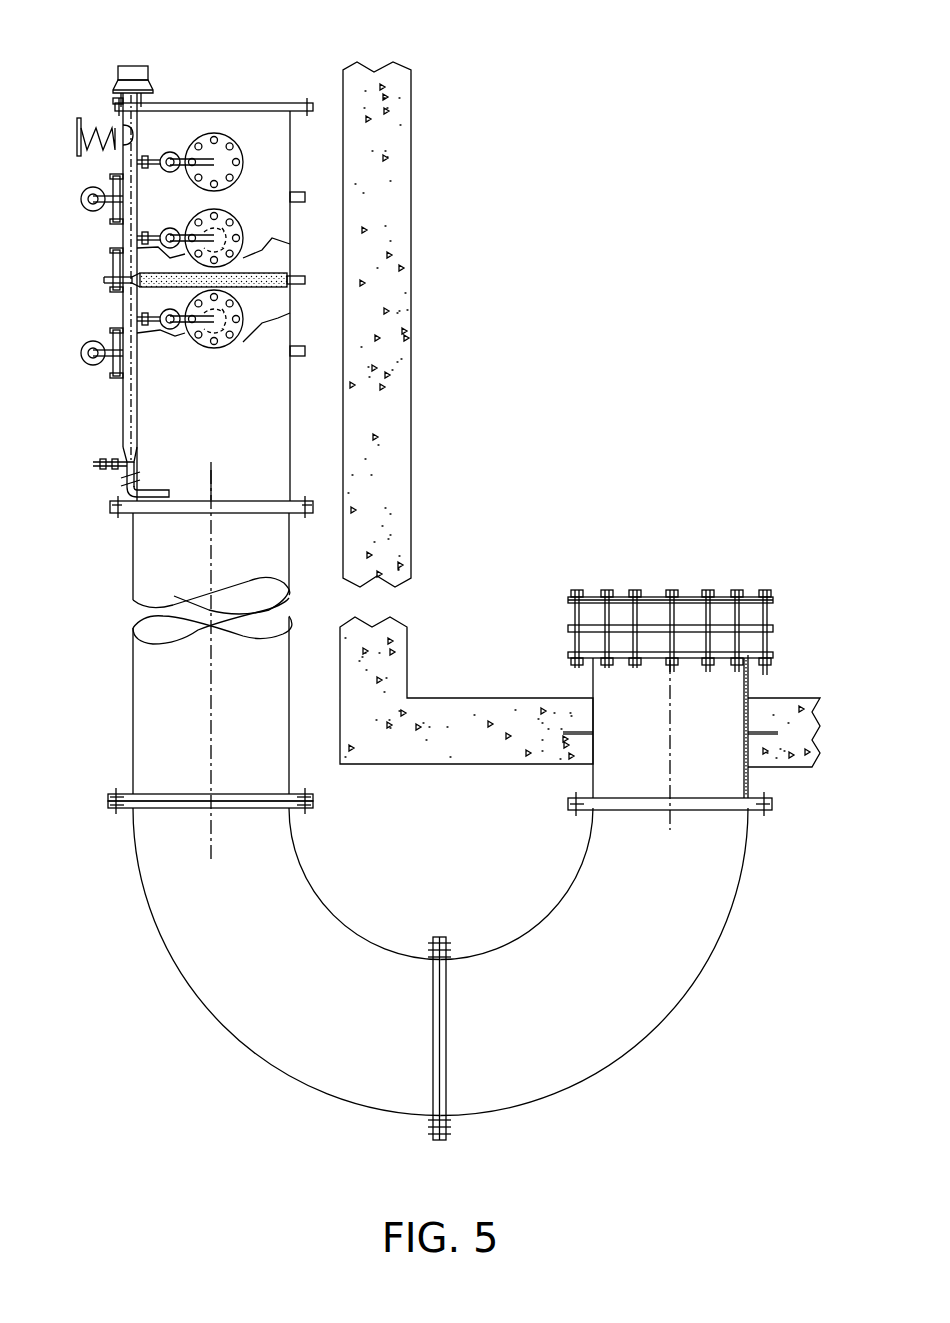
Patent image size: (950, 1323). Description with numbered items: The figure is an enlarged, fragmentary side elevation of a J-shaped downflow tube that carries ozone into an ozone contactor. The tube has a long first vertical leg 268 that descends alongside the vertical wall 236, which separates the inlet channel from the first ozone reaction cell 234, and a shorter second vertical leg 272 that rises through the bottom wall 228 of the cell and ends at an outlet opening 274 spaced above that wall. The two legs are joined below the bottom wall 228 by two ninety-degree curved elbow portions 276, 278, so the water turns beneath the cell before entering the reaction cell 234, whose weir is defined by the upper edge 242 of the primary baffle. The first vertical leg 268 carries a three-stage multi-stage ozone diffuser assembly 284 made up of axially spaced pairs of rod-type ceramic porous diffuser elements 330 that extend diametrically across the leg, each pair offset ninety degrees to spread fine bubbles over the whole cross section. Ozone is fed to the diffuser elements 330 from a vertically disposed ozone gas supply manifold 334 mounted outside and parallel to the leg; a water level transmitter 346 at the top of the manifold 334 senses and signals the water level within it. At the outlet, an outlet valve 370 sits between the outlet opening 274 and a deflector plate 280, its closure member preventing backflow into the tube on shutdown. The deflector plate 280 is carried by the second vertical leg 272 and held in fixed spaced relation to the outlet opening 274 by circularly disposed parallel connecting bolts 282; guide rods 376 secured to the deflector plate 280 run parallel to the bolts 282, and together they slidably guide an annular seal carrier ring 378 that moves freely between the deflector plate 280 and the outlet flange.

The bottom wall 228 is at (821, 726).
The first ozone reaction cell 234 is at (563, 346).
The vertical wall 236 is at (408, 296).
The upper edge 242 is at (86, 126).
The first vertical leg 268 is at (222, 414).
The second vertical leg 272 is at (749, 776).
The outlet opening 274 is at (697, 655).
The curved elbow portion 276 is at (262, 1050).
The curved elbow portion 278 is at (634, 1046).
The deflector plate 280 is at (688, 600).
The connecting bolts 282 is at (773, 612).
The multi-stage ozone diffuser assembly 284 is at (89, 295).
The porous diffuser elements 330 is at (250, 251).
The ozone gas supply manifold 334 is at (118, 160).
The water level transmitter 346 is at (143, 64).
The outlet valve 370 is at (742, 633).
The guide rods 376 is at (568, 613).
The annular seal carrier ring 378 is at (584, 620).